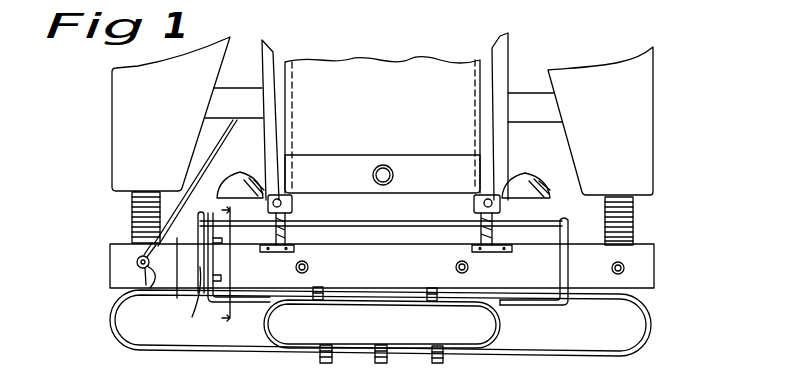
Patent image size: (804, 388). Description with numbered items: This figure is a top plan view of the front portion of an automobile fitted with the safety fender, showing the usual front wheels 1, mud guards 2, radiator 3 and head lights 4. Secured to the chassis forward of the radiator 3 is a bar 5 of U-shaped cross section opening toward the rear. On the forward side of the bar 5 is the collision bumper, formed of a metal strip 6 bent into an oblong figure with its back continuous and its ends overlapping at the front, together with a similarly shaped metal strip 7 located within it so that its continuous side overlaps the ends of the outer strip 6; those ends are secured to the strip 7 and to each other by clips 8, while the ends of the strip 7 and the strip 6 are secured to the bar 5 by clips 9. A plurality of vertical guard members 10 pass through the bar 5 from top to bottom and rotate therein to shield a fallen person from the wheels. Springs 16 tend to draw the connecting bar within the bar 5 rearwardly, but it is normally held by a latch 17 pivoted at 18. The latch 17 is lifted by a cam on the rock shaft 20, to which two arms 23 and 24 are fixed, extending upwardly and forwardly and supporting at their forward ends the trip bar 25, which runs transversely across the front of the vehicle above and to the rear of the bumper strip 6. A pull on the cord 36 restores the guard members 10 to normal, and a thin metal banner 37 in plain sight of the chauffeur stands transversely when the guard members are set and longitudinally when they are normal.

The front wheels 1 is at (140, 215).
The mud guards 2 is at (117, 156).
The radiator 3 is at (356, 170).
The head lights 4 is at (246, 180).
The bar 5 is at (656, 278).
The metal strip 6 is at (195, 352).
The metal strip 7 is at (182, 240).
The clips 8 is at (438, 347).
The clips 9 is at (430, 302).
The vertical guard members 10 is at (457, 262).
The springs 16 is at (290, 230).
The latch 17 is at (222, 240).
The pivot 18 is at (221, 278).
The rock shaft 20 is at (405, 222).
The arm 23 is at (187, 304).
The arm 24 is at (563, 268).
The trip bar 25 is at (516, 306).
The cord 36 is at (205, 166).
The metal banner 37 is at (140, 279).